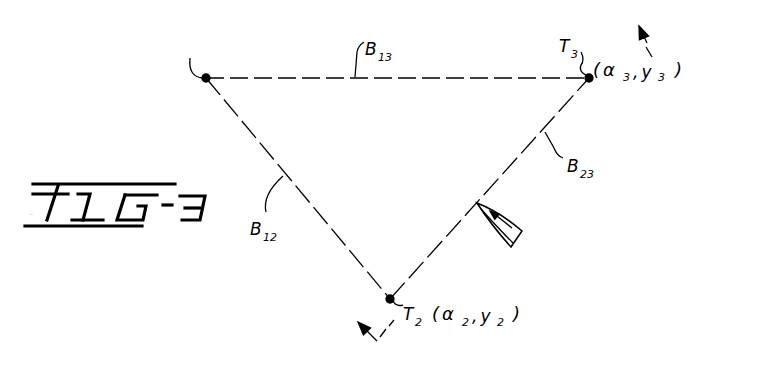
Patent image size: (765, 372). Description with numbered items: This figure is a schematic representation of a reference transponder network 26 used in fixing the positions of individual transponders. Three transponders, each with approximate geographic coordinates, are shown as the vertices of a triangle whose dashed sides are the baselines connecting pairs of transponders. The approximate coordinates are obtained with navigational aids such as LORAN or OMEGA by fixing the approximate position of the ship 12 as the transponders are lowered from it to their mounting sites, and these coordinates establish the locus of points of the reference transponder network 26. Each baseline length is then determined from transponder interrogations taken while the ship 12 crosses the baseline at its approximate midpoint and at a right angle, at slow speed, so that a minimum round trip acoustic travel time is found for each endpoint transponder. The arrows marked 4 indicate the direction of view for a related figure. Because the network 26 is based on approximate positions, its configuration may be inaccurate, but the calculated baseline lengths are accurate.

The reference transponder network 26 is at (198, 112).
The direction of view arrows 4 is at (497, 175).
The ship 12 is at (487, 225).